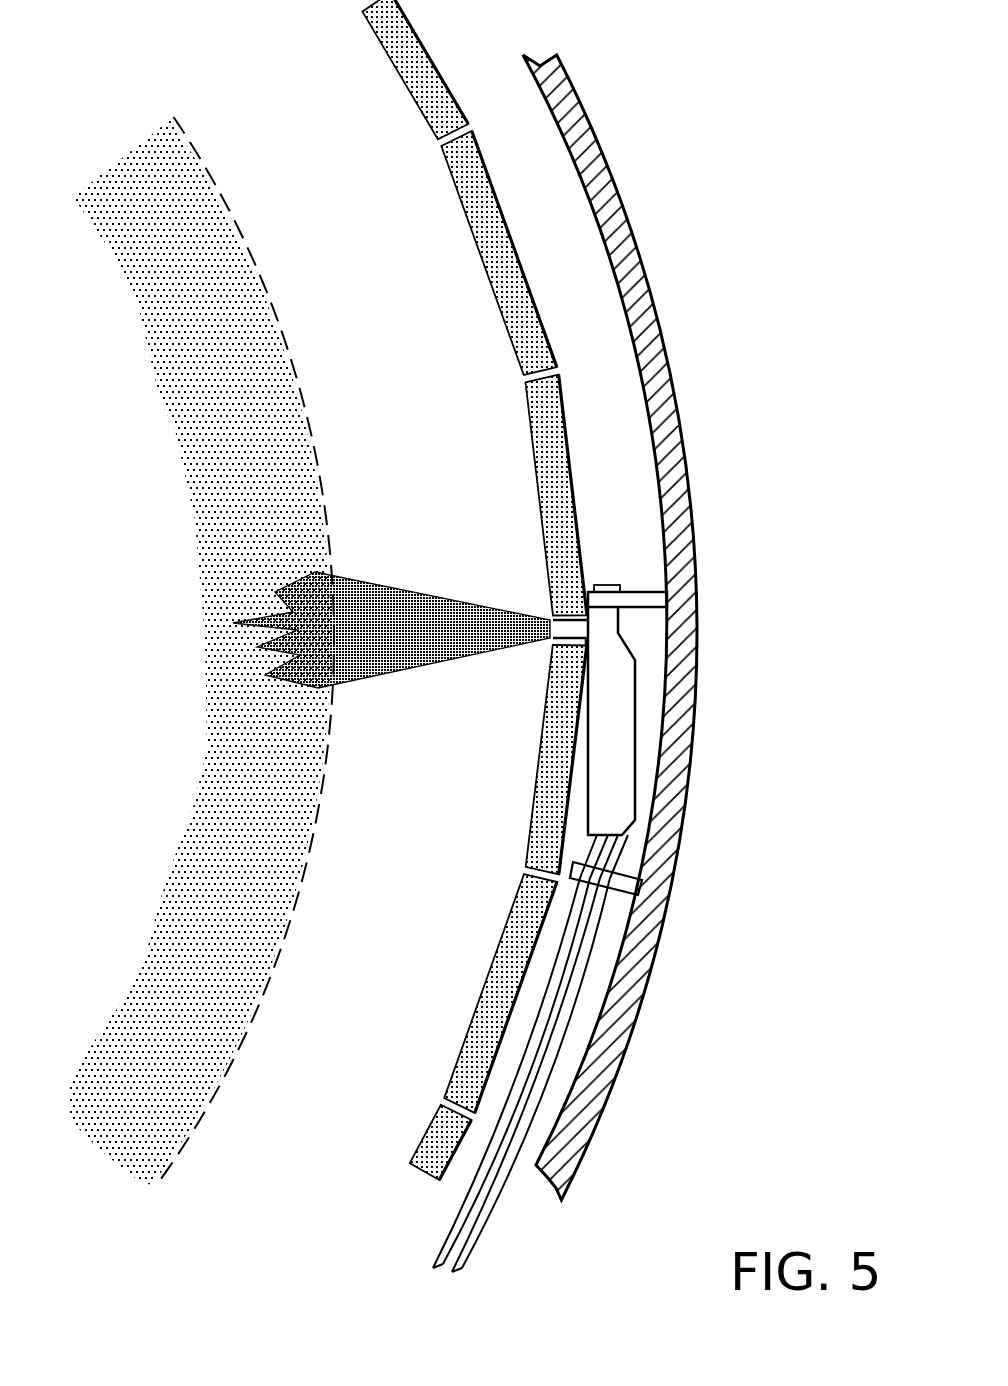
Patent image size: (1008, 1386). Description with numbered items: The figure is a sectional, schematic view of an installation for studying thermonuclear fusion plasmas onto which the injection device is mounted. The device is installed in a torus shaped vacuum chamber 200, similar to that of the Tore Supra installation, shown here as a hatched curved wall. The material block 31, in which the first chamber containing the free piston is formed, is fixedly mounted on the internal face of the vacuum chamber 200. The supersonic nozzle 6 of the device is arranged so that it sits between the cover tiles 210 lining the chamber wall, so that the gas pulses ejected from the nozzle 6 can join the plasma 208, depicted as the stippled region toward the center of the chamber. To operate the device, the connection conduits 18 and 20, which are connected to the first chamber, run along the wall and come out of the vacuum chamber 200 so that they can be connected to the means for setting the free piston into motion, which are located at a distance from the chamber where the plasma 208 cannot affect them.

The plasma 208 is at (153, 197).
The cover tiles 210 is at (550, 460).
The supersonic nozzle 6 is at (575, 655).
The material block 31 is at (617, 782).
The vacuum chamber 200 is at (640, 1066).
The connection conduit 18 is at (450, 1240).
The connection conduit 20 is at (470, 1262).